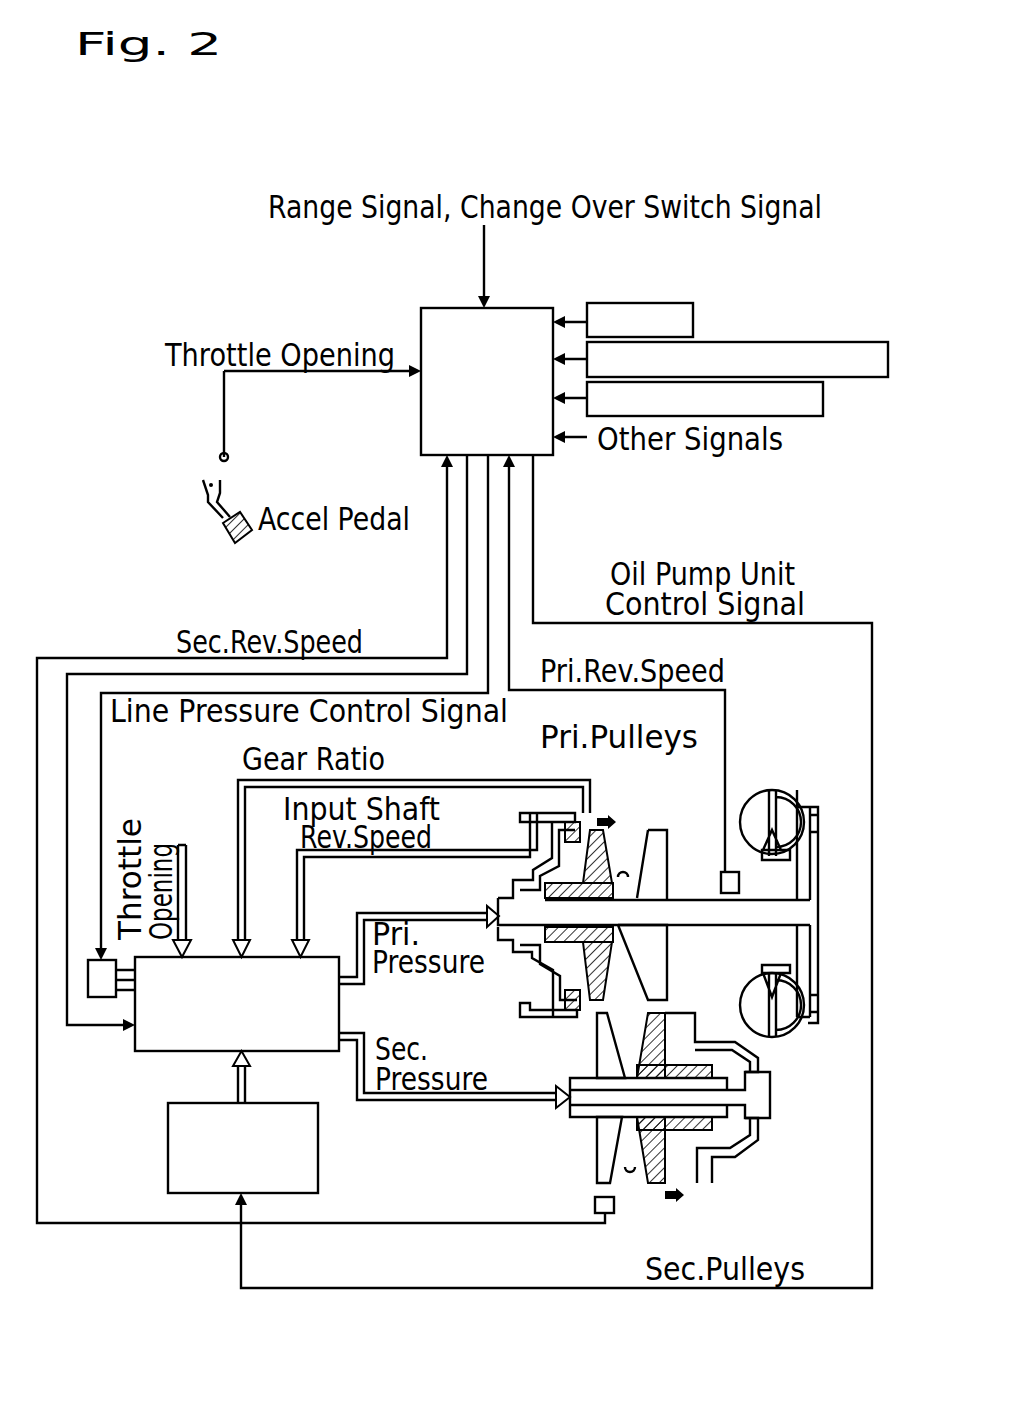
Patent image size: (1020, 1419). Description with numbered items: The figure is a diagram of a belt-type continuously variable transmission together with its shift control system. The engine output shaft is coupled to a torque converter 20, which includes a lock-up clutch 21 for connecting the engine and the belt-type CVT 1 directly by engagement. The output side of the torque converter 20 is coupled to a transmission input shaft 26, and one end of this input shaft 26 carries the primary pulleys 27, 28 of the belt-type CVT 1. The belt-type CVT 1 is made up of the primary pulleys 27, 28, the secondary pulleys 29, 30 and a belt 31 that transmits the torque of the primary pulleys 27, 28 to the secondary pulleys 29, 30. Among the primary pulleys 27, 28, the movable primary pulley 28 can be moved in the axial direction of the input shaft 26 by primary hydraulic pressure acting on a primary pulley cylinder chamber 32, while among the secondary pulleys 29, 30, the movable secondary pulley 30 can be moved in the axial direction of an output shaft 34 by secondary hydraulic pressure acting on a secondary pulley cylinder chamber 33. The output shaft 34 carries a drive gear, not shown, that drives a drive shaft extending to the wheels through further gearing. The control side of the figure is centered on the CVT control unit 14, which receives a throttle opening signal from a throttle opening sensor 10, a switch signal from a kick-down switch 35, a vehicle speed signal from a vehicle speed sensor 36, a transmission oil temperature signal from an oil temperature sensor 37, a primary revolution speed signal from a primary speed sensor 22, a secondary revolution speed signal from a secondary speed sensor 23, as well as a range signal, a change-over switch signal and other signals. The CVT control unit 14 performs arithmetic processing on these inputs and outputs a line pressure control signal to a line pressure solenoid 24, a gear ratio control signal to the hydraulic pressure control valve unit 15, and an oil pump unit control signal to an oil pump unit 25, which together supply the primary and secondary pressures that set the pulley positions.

The belt-type CVT 1 is at (530, 970).
The throttle opening sensor 10 is at (220, 457).
The CVT control unit 14 is at (421, 308).
The hydraulic pressure control valve unit 15 is at (162, 1052).
The torque converter 20 is at (780, 790).
The lock-up clutch 21 is at (810, 950).
The primary speed sensor 22 is at (739, 883).
The secondary speed sensor 23 is at (595, 1207).
The line pressure solenoid 24 is at (97, 997).
The oil pump unit 25 is at (318, 1150).
The transmission input shaft 26 is at (688, 932).
The primary pulley 27 is at (655, 830).
The movable primary pulley 28 is at (600, 852).
The secondary pulley 29 is at (608, 1183).
The movable secondary pulley 30 is at (700, 1185).
The belt 31 is at (633, 975).
The primary pulley cylinder chamber 32 is at (571, 858).
The secondary pulley cylinder chamber 33 is at (750, 1070).
The output shaft 34 is at (762, 1108).
The kick-down switch 35 is at (693, 320).
The vehicle speed sensor 36 is at (830, 342).
The oil temperature sensor 37 is at (823, 398).